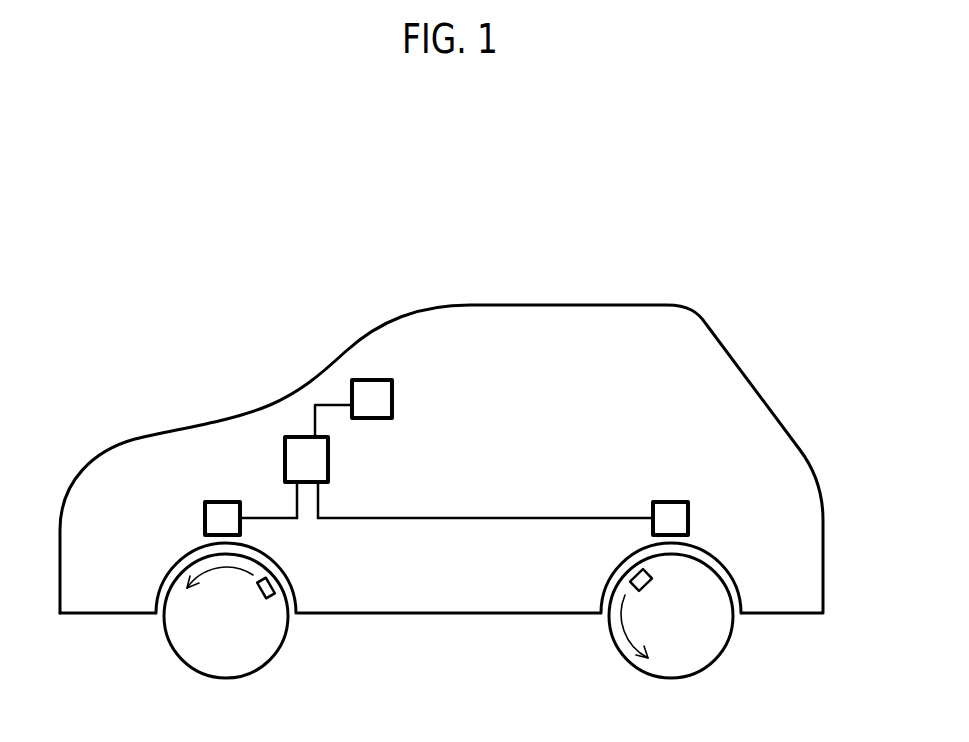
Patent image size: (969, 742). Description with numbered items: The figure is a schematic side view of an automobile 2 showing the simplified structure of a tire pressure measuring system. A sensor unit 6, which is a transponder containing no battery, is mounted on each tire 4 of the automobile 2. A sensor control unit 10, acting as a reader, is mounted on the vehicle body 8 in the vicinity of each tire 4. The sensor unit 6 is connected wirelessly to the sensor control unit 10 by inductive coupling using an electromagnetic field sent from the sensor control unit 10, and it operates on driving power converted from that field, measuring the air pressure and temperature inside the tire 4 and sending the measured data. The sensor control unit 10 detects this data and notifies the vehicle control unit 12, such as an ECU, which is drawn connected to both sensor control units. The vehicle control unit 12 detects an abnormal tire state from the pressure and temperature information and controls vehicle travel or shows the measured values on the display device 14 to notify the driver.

The automobile 2 is at (453, 409).
The tire 4 is at (263, 645).
The sensor unit 6 is at (258, 597).
The vehicle body 8 is at (738, 403).
The sensor control unit 10 is at (223, 507).
The vehicle control unit 12 is at (328, 460).
The display device 14 is at (392, 398).